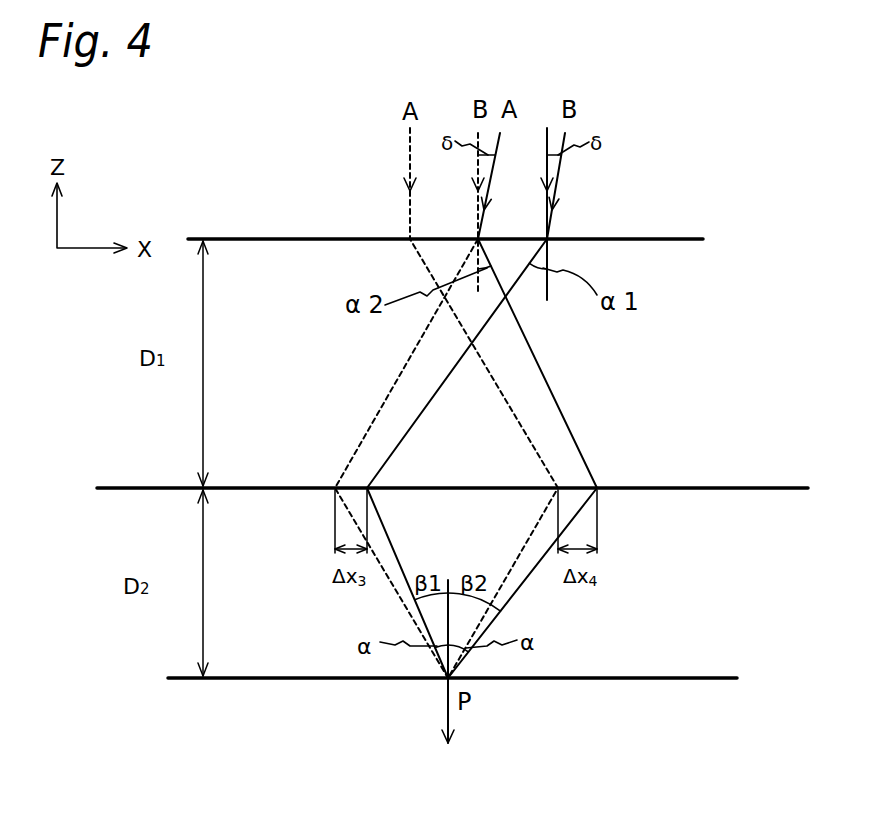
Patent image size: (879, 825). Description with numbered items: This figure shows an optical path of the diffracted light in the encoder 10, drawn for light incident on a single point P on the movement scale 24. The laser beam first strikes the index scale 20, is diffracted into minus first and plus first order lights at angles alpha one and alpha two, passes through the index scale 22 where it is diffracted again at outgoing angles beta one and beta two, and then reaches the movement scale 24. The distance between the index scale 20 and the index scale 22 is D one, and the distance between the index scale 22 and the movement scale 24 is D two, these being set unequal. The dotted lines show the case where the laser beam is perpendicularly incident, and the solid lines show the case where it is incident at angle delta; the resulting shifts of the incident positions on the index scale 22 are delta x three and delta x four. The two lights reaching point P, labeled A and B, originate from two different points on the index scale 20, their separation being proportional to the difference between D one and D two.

The encoder 10 is at (630, 102).
The index scale 20 is at (633, 239).
The index scale 22 is at (745, 488).
The movement scale 24 is at (662, 678).